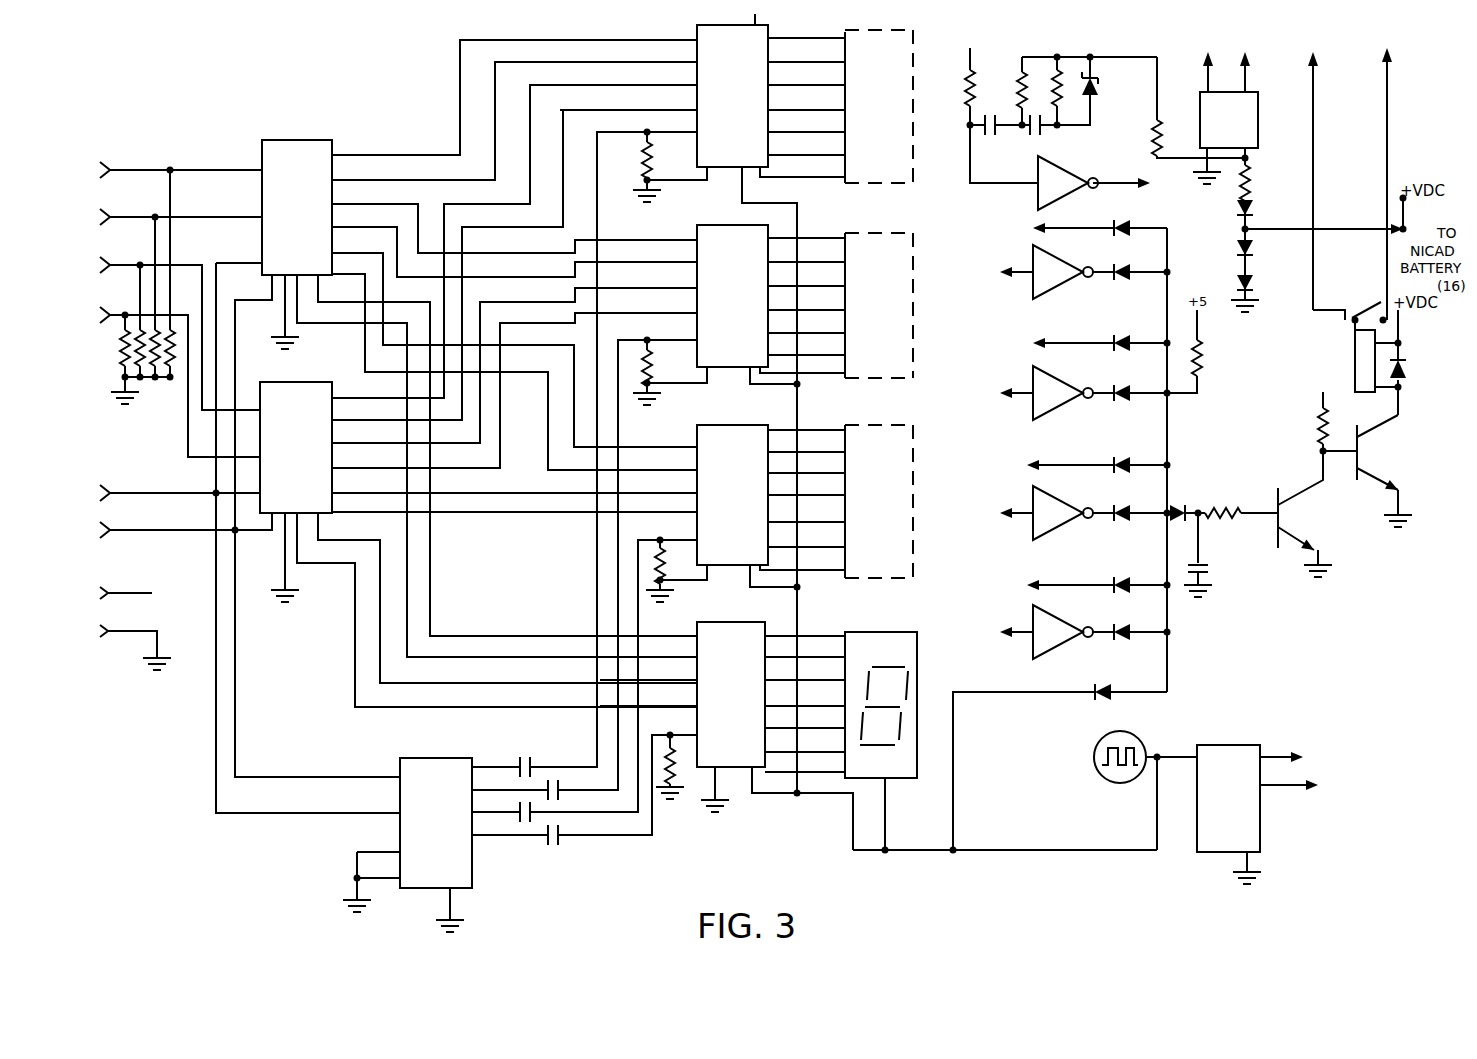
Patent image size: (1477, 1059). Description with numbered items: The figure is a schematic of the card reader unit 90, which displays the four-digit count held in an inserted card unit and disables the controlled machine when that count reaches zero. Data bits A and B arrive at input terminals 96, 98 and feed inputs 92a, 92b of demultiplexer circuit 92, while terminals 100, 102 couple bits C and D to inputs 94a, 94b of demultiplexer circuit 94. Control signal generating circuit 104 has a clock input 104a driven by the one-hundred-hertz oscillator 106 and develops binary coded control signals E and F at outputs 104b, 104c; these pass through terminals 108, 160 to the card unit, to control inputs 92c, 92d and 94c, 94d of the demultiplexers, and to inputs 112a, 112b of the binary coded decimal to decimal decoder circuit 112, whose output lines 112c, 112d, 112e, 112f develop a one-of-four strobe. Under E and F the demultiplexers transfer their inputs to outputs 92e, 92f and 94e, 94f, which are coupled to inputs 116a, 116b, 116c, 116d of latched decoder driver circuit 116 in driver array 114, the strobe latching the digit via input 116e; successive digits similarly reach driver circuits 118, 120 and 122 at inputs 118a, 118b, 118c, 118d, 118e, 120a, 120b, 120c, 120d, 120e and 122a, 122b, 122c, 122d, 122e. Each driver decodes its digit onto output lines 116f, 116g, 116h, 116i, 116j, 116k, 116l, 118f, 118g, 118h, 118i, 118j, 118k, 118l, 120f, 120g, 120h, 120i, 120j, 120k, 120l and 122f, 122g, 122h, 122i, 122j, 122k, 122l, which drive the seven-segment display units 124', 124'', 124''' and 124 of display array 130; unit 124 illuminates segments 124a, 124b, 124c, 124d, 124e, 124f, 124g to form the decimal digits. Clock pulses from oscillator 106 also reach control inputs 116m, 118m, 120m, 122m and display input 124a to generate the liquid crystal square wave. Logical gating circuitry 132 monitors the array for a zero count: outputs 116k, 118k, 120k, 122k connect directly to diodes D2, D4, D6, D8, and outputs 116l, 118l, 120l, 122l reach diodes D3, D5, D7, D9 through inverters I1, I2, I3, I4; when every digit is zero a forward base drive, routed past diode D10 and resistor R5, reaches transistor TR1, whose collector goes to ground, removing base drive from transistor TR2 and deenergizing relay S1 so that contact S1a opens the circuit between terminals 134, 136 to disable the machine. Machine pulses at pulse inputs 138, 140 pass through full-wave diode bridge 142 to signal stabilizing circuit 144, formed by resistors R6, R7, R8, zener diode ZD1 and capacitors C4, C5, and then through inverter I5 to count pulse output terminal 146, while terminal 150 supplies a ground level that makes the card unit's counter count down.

The card reader unit 90 is at (413, 52).
The demultiplexer circuit 92 is at (272, 140).
The input 92a is at (238, 168).
The input 92b is at (246, 207).
The control input 92c is at (246, 264).
The control input 92d is at (262, 300).
The output 92e is at (340, 155).
The output 92f is at (356, 180).
The demultiplexer circuit 94 is at (283, 382).
The input 94a is at (248, 408).
The input 94b is at (250, 457).
The control input 94c is at (250, 493).
The control input 94d is at (262, 533).
The output 94e is at (352, 396).
The output 94f is at (345, 420).
The input terminal 96 is at (134, 170).
The input terminal 98 is at (132, 217).
The terminal 100 is at (124, 265).
The terminal 102 is at (133, 315).
The terminal 108 is at (142, 493).
The input line F 160 is at (130, 532).
The terminal 150 is at (178, 624).
The binary coded decimal to decimal decoder circuit 112 is at (383, 746).
The input 112a is at (345, 777).
The input 112b is at (343, 813).
The output line 112c is at (498, 762).
The output line 112d is at (548, 785).
The output line 112e is at (520, 822).
The output line 112f is at (515, 825).
The driver array 114 is at (590, 32).
The latched decoder driver circuit 116 is at (733, 87).
The input 116a is at (665, 44).
The input 116b is at (660, 62).
The input 116c is at (662, 85).
The input 116d is at (664, 110).
The driver input 116e is at (668, 132).
The output line 116f is at (796, 28).
The output line 116g is at (794, 50).
The output line 116h is at (794, 73).
The output line 116i is at (794, 97).
The output line 116j is at (794, 120).
The output 116k is at (794, 143).
The output 116l is at (795, 180).
The control input 116m is at (764, 183).
The latched decoder driver circuit 118 is at (708, 222).
The input 118a is at (666, 240).
The input 118b is at (666, 262).
The input 118c is at (666, 287).
The input 118d is at (636, 304).
The driver input 118e is at (666, 340).
The driver output 118f is at (808, 222).
The driver output 118g is at (803, 250).
The driver output 118h is at (803, 274).
The driver output 118i is at (803, 298).
The driver output 118j is at (803, 321).
The output 118k is at (803, 343).
The output 118l is at (805, 375).
The control input 118m is at (795, 386).
The latched decoder driver circuit 120 is at (708, 422).
The driver input 120a is at (666, 447).
The driver input 120b is at (666, 469).
The driver input 120c is at (666, 492).
The driver input 120d is at (666, 512).
The driver input 120e is at (662, 538).
The driver output 120f is at (808, 414).
The driver output 120g is at (803, 440).
The driver output 120h is at (803, 461).
The driver output 120i is at (803, 483).
The driver output 120j is at (803, 510).
The output 120k is at (803, 535).
The output 120l is at (805, 575).
The control input 120m is at (795, 589).
The latched decoder driver circuit 122 is at (708, 620).
The driver input 122a is at (666, 635).
The driver input 122b is at (666, 656).
The driver input 122c is at (666, 679).
The driver input 122d is at (666, 704).
The driver input 122e is at (666, 732).
The driver output 122f is at (804, 622).
The driver output 122g is at (803, 645).
The driver output 122h is at (803, 668).
The driver output 122i is at (803, 694).
The driver output 122j is at (803, 716).
The output 122k is at (803, 740).
The output 122l is at (803, 761).
The control input 122m is at (760, 795).
The seven-segment decimal display unit 124 is at (903, 730).
The seven segment display 124' is at (903, 101).
The seven segment display 124'' is at (907, 296).
The seven segment display 124''' is at (909, 492).
The display segment 124a is at (885, 665).
The display segment 124b is at (866, 680).
The display segment 124c is at (906, 688).
The display segment 124d is at (890, 706).
The display segment 124e is at (868, 728).
The display segment 124f is at (902, 722).
The display segment 124g is at (880, 748).
The display array 130 is at (940, 22).
The logical gating circuitry 132 is at (1203, 216).
The terminal 134 is at (1390, 102).
The terminal 136 is at (1316, 102).
The pulse input 138 is at (1250, 75).
The pulse input 140 is at (1200, 85).
The full-wave diode bridge 142 is at (1240, 118).
The signal stabilizing circuit 144 is at (1030, 46).
The count pulse output terminal 146 is at (1120, 183).
The control signal generating circuit 104 is at (1260, 822).
The clock input 104a is at (1178, 755).
The output 104b is at (1272, 755).
The output 104c is at (1300, 790).
The oscillator 106 is at (1094, 757).
The resistor R5 is at (1238, 504).
The resistor R6 is at (1068, 93).
The resistor R7 is at (1011, 93).
The resistor R8 is at (975, 80).
The capacitor C4 is at (1039, 135).
The capacitor C5 is at (996, 135).
The zener diode ZD1 is at (1095, 91).
The diode D2 is at (1068, 223).
The diode D3 is at (1142, 264).
The diode D4 is at (1066, 335).
The diode D5 is at (1142, 385).
The diode D6 is at (1066, 457).
The diode D7 is at (1142, 505).
The diode D8 is at (1066, 577).
The diode D9 is at (1142, 625).
The diode D10 is at (1189, 545).
The inverter circuit I1 is at (1048, 287).
The inverter circuit I2 is at (1048, 408).
The inverter circuit I3 is at (1048, 528).
The inverter circuit I4 is at (1048, 620).
The inverter I5 is at (1038, 197).
The transistor TR1 is at (1305, 514).
The transistor TR2 is at (1365, 451).
The relay S1 is at (1355, 358).
The relay contact S1a is at (1368, 295).